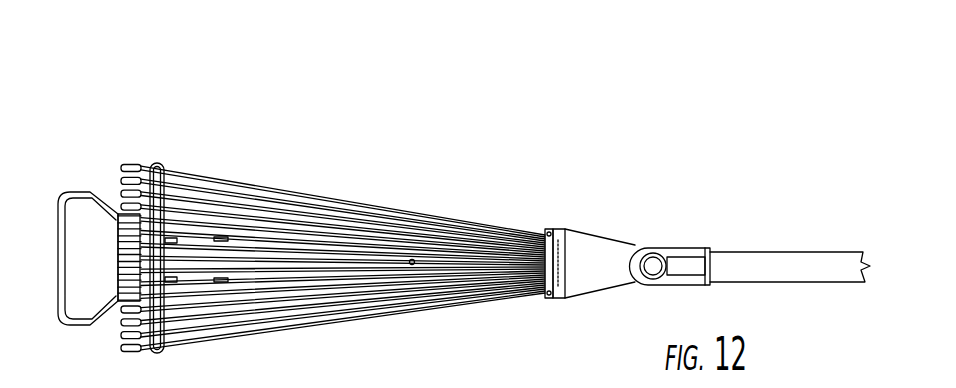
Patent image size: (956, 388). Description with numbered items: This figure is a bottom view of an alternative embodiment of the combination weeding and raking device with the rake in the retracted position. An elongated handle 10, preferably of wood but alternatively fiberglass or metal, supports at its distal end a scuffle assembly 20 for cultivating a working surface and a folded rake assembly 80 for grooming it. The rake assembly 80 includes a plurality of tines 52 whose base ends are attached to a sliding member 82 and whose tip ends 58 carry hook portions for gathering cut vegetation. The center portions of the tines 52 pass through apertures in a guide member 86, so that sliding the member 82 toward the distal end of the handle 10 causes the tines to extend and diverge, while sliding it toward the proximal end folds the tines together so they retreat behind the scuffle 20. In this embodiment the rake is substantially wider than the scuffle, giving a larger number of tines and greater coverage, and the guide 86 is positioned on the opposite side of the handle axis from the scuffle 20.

The elongated handle 10 is at (757, 250).
The scuffle assembly 20 is at (81, 192).
The tines 52 is at (240, 184).
The tip end 58 is at (129, 166).
The folded rake assembly 80 is at (433, 118).
The sliding member 82 is at (620, 243).
The guide member 86 is at (161, 165).